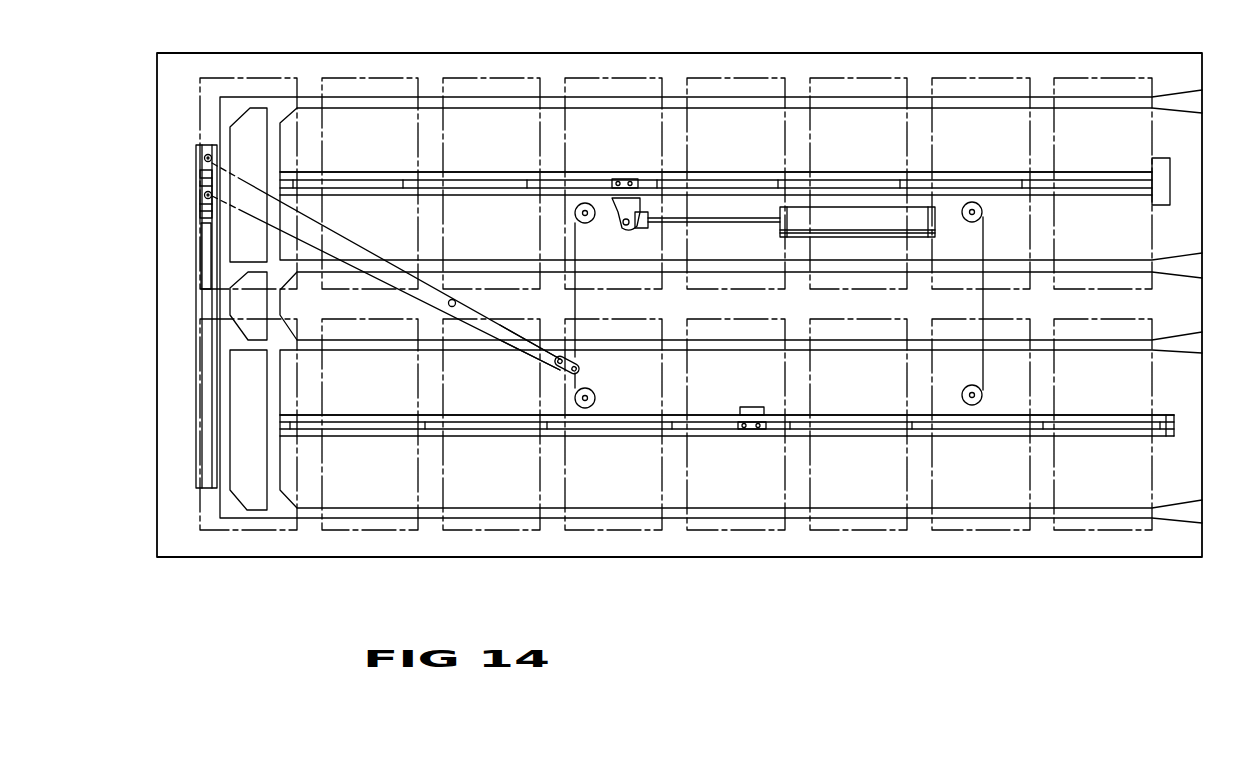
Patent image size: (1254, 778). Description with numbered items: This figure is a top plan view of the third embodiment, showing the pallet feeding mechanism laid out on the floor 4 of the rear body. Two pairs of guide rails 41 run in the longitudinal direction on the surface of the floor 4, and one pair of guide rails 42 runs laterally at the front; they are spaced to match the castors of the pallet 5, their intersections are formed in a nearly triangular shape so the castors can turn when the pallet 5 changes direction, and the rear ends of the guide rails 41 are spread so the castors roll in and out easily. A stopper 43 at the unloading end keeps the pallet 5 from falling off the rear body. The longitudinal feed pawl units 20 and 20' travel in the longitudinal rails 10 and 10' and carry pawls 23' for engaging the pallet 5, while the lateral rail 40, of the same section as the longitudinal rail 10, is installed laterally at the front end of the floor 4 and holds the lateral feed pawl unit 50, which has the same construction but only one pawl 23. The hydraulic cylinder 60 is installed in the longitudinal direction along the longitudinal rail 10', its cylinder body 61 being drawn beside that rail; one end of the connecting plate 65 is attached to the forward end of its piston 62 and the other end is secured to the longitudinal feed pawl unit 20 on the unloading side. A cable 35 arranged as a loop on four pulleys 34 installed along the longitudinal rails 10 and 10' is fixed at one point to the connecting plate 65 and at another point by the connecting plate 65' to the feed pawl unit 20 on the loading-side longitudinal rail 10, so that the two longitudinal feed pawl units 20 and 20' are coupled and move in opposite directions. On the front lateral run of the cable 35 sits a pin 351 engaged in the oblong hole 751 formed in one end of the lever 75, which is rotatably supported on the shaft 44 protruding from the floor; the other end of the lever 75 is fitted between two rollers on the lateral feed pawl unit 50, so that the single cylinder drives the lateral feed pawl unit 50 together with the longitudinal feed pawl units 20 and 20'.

The floor 4 is at (1192, 540).
The pallet 5 is at (1003, 80).
The longitudinal rail 10 is at (727, 443).
The longitudinal rail 10' is at (716, 161).
The longitudinal feed pawl unit 20 is at (727, 443).
The longitudinal feed pawl unit 20' is at (716, 170).
The pawl 23 is at (643, 335).
The pawl 23' is at (631, 166).
The pulley 34 is at (575, 213).
The cable 35 is at (985, 311).
The lateral rail 40 is at (196, 328).
The guide rail 41 is at (699, 100).
The guide rail 42 is at (226, 376).
The stopper 43 is at (1160, 160).
The shaft 44 is at (456, 303).
The lateral feed pawl unit 50 is at (207, 235).
The hydraulic cylinder 60 is at (752, 224).
The cylinder body 61 is at (848, 235).
The piston 62 is at (706, 224).
The connecting plate 65 is at (617, 217).
The connecting plate 65' is at (747, 397).
The lever 75 is at (345, 250).
The oblong hole 751 is at (556, 368).
The pin 351 is at (578, 368).